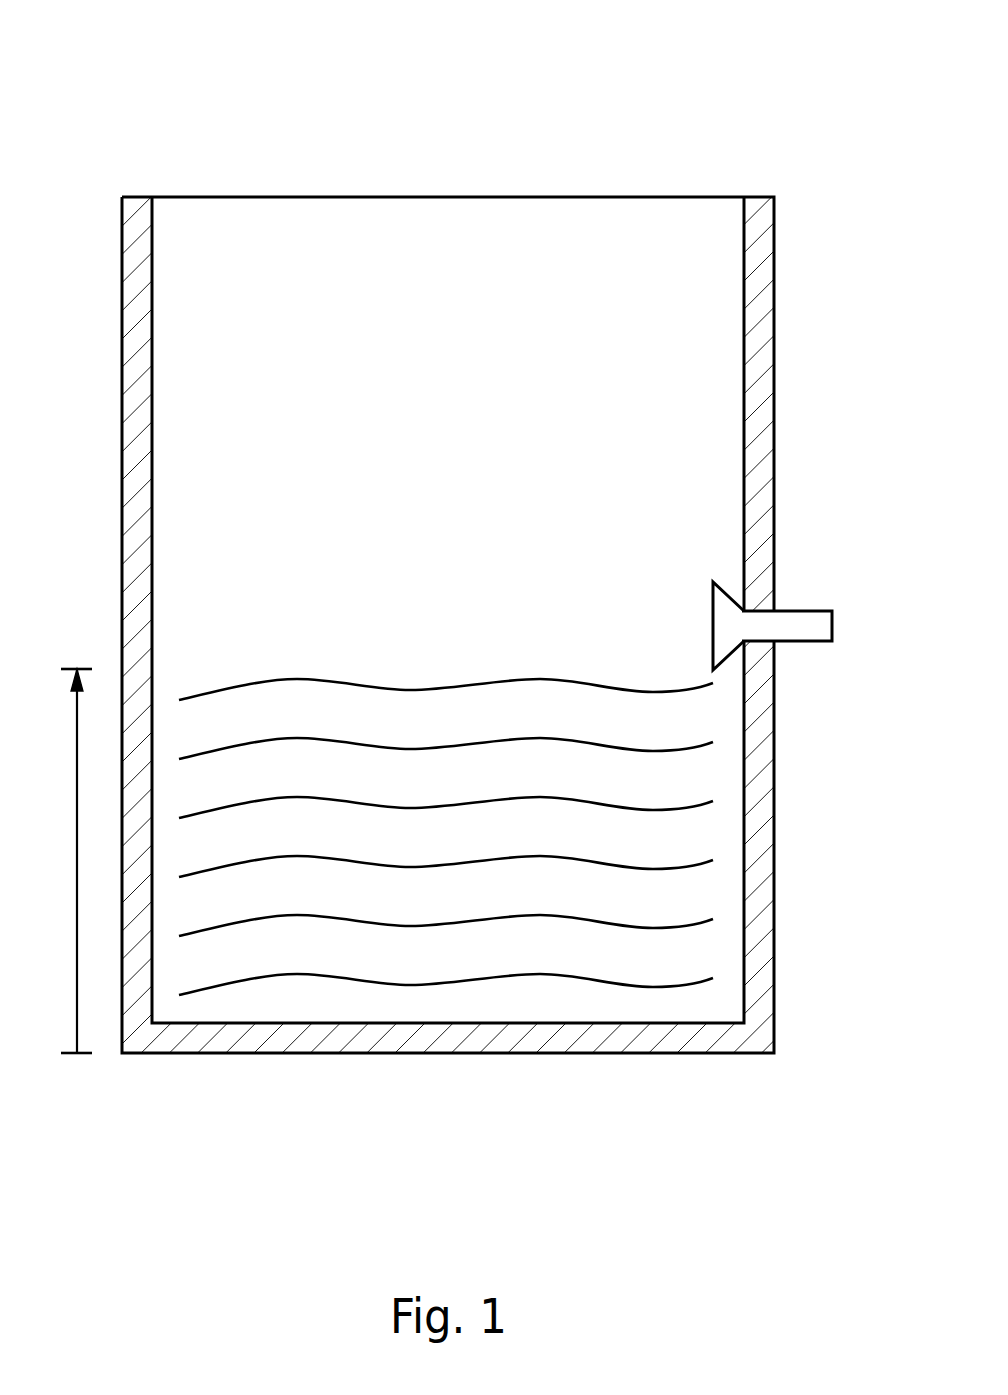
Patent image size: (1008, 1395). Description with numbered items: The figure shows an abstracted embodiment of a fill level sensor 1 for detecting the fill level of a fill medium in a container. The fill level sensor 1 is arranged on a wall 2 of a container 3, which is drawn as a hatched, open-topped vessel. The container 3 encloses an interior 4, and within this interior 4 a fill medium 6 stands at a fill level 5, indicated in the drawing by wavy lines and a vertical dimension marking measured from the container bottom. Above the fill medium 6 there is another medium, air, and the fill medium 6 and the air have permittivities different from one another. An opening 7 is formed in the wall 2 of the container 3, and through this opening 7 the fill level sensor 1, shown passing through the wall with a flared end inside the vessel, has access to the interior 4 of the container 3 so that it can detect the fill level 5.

The fill level sensor 1 is at (838, 572).
The wall 2 is at (753, 397).
The container 3 is at (504, 553).
The interior 4 is at (234, 303).
The fill level 5 is at (58, 861).
The fill medium 6 is at (454, 858).
The opening 7 is at (789, 667).